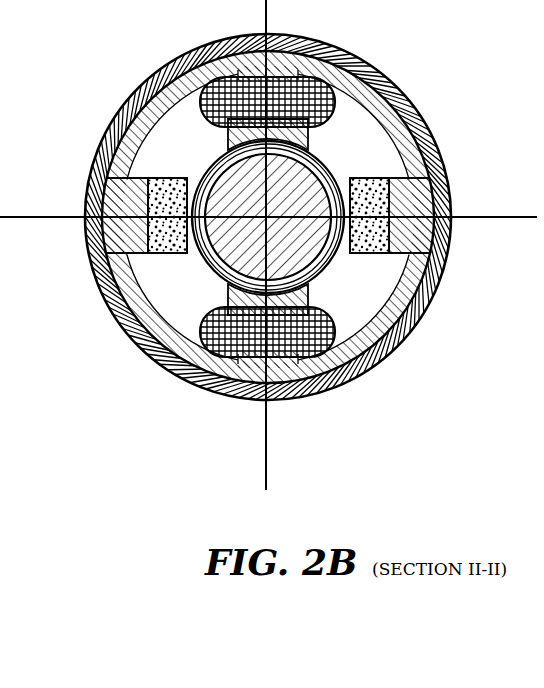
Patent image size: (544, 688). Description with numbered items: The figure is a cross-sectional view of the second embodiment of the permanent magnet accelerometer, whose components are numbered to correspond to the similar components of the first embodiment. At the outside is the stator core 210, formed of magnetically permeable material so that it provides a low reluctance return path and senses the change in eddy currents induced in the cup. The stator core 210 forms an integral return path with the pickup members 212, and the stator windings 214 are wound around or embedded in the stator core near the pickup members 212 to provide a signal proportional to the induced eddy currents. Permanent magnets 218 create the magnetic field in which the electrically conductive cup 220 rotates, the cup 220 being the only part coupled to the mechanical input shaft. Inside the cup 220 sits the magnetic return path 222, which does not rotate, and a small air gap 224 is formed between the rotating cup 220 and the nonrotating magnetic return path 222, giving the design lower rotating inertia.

The stator core 210 is at (305, 395).
The pickup members 212 is at (312, 124).
The stator windings 214 is at (290, 83).
The permanent magnets 218 is at (160, 180).
The cup 220 is at (335, 172).
The magnetic return path 222 is at (293, 240).
The air gap 224 is at (227, 268).